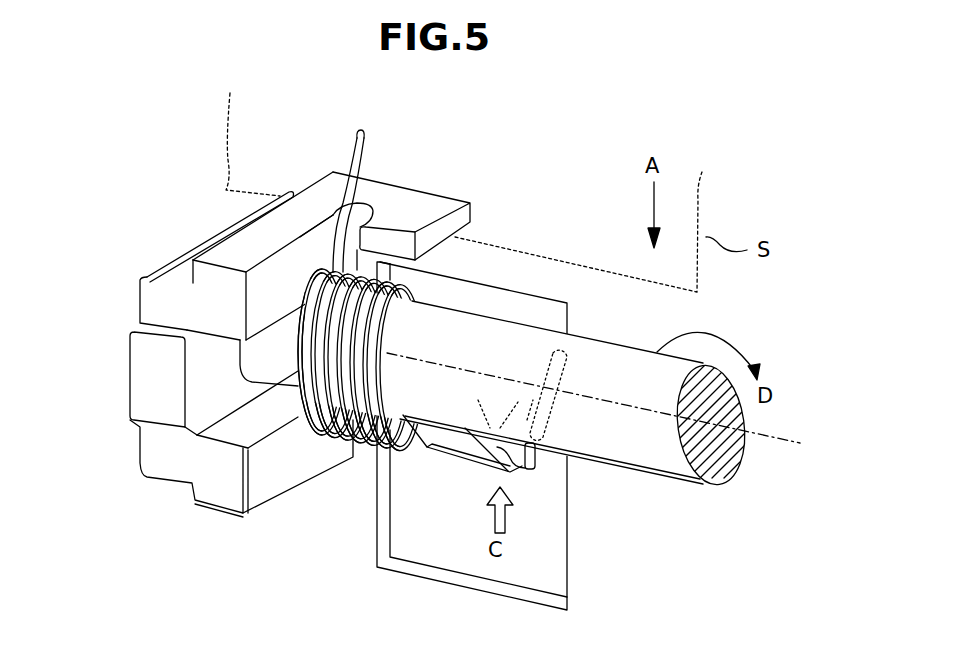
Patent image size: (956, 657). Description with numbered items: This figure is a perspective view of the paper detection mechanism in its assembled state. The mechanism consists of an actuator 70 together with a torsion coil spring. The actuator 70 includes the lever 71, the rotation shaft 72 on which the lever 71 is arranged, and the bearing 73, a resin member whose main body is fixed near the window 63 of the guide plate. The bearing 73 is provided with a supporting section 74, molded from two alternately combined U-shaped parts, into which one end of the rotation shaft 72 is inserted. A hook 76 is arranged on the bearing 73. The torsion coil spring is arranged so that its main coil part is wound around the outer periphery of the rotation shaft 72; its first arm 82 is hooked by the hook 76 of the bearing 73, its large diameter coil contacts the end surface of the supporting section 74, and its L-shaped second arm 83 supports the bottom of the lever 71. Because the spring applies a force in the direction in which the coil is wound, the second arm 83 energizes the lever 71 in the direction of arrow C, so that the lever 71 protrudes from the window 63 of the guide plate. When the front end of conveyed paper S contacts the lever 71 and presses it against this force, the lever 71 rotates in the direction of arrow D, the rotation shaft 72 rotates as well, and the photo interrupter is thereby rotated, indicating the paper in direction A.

The window 63 is at (387, 525).
The actuator 70 is at (552, 401).
The lever 71 is at (463, 467).
The rotation shaft 72 is at (647, 452).
The bearing 73 is at (160, 483).
The supporting section 74 is at (257, 422).
The hook 76 is at (415, 207).
The first arm 82 is at (347, 157).
The second arm 83 is at (540, 460).